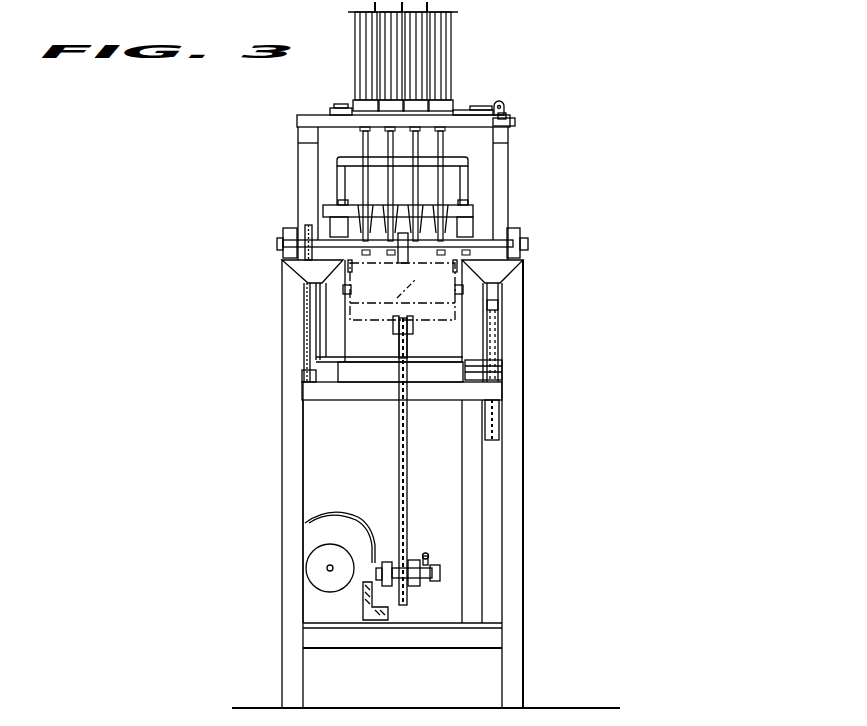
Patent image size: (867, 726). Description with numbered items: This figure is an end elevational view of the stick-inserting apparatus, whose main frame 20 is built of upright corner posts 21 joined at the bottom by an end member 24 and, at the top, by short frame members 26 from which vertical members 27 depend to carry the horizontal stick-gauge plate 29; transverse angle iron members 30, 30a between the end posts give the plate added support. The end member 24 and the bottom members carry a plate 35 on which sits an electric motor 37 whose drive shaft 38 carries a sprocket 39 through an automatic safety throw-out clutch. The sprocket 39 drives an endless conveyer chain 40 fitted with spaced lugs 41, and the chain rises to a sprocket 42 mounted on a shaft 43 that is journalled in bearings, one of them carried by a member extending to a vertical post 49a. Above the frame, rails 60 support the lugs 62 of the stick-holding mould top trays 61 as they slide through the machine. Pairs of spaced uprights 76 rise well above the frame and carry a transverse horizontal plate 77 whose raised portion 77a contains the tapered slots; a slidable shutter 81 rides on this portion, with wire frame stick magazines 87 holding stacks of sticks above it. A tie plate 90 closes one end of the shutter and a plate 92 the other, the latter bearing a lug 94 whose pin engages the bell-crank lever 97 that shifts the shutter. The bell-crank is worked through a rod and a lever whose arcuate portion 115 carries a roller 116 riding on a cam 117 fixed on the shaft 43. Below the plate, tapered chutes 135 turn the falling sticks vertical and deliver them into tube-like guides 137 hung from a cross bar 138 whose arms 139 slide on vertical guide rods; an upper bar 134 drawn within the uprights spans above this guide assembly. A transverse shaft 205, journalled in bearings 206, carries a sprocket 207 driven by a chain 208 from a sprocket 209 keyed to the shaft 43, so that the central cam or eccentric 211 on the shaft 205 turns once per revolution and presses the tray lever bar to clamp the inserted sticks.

The main frame 20 is at (523, 528).
The upright corner posts 21 is at (282, 520).
The end member 24 is at (386, 640).
The short frame members 26 is at (312, 272).
The vertical member 27 is at (306, 345).
The stick-gauge plate 29 is at (445, 402).
The transverse angle iron member 30 is at (358, 402).
The transverse angle iron member 30a is at (392, 404).
The plate 35 is at (410, 622).
The electric motor 37 is at (346, 525).
The drive shaft 38 is at (440, 572).
The sprocket 39 is at (406, 562).
The endless conveyer chain 40 is at (408, 514).
The spaced lugs 41 is at (413, 322).
The sprocket 42 is at (398, 346).
The shaft 43 is at (478, 378).
The vertical post 49a is at (486, 448).
The track bars or rails 60 is at (310, 325).
The mould top trays 61 is at (410, 290).
The supporting lugs 62 is at (352, 288).
The uprights 76 is at (510, 156).
The horizontal plate 77 is at (312, 118).
The raised portion 77a is at (440, 113).
The slidable shutter 81 is at (468, 112).
The wire frame stick magazine 87 is at (450, 72).
The tie plate 90 is at (340, 107).
The plate 92 is at (500, 106).
The lug 94 is at (516, 123).
The bell-crank lever 97 is at (506, 115).
The arcuate portion 115 is at (494, 312).
The roller 116 is at (492, 328).
The cam 117 is at (492, 353).
The upper bar 134 is at (337, 172).
The tapered guide sleeve or chute 135 is at (412, 147).
The stick-guiding member 137 is at (430, 231).
The cross bar 138 is at (358, 224).
The arms 139 is at (470, 209).
The shaft 205 is at (281, 244).
The bearings 206 is at (290, 256).
The sprocket 207 is at (304, 226).
The chain 208 is at (330, 340).
The sprocket 209 is at (303, 378).
The cam or eccentric element 211 is at (408, 249).